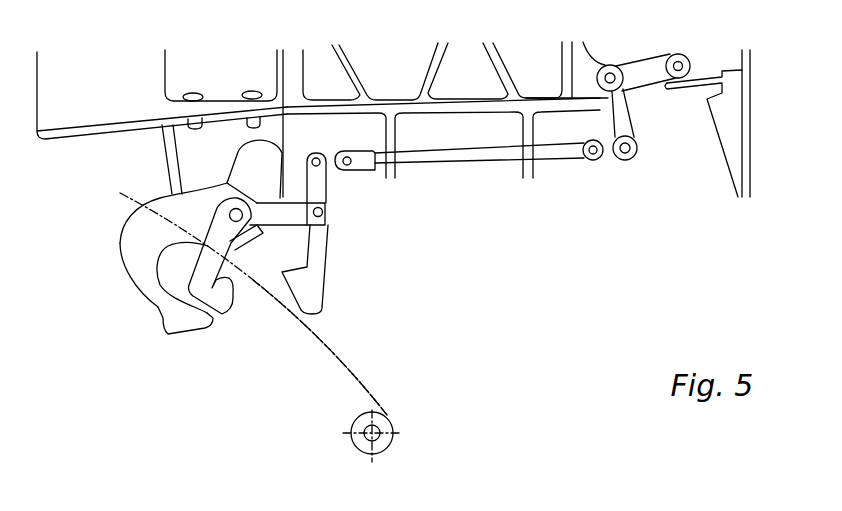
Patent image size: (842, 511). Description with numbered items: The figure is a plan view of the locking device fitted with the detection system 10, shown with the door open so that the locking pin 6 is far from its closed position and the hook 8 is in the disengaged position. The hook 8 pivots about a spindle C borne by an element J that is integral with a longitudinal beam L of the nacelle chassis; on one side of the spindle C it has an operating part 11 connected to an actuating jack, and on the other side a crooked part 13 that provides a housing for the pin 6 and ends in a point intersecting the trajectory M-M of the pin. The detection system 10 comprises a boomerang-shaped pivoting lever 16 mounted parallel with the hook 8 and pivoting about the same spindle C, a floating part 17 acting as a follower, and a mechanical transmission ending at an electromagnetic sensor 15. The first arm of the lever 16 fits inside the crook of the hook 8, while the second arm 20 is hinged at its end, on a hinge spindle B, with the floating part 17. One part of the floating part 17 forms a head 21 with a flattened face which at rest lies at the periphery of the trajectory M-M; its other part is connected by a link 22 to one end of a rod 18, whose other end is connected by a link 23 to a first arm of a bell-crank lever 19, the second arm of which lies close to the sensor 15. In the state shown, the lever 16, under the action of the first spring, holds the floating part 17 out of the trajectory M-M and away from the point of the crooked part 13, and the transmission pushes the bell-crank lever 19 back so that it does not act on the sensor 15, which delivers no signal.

The locking pin 6 is at (352, 420).
The hook 8 is at (120, 243).
The detection system 10 is at (343, 217).
The operating part 11 is at (243, 182).
The crooked part 13 is at (158, 308).
The sensor 15 is at (713, 72).
The pivoting lever 16 is at (233, 303).
The floating part 17 is at (328, 265).
The rod 18 is at (490, 163).
The bell-crank lever 19 is at (634, 114).
The second arm 20 is at (297, 235).
The head 21 is at (298, 316).
The link 22 is at (334, 148).
The link 23 is at (612, 162).
The longitudinal beam L is at (467, 57).
The element J is at (229, 148).
The spindle C is at (227, 183).
The hinge spindle B is at (326, 208).
The trajectory M- M is at (251, 292).